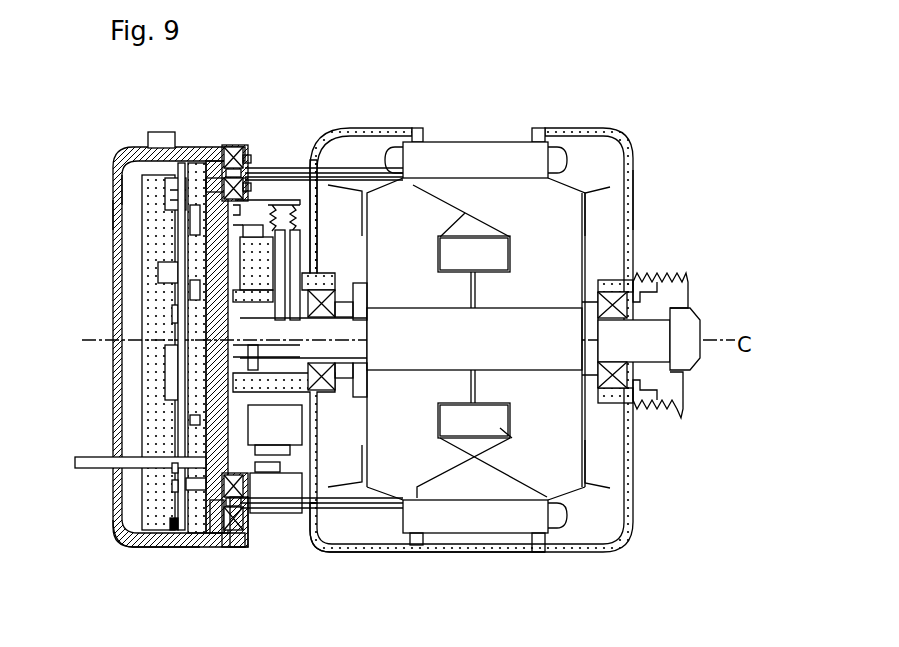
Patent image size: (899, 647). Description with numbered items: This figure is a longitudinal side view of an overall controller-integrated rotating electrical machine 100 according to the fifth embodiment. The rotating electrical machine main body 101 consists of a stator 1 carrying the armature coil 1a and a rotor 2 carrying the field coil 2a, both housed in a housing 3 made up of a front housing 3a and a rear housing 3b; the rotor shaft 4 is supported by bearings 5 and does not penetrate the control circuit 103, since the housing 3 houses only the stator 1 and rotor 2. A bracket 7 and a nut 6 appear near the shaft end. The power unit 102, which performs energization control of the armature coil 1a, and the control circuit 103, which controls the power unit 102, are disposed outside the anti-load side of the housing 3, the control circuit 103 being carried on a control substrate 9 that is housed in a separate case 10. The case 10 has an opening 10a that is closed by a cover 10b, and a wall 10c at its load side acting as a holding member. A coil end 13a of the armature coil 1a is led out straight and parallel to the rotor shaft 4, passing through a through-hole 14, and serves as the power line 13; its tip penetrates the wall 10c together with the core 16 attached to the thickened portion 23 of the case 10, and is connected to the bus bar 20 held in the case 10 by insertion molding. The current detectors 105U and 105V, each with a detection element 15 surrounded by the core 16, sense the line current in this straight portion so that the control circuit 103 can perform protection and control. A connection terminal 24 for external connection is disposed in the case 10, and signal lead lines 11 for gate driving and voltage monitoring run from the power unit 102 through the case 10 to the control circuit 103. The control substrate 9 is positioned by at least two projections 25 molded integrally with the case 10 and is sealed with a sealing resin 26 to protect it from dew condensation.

The case 10 is at (132, 153).
The opening of the case 10a is at (122, 186).
The cover 10b is at (120, 210).
The wall (holding member) 10c is at (212, 302).
The current detector 105V is at (218, 150).
The current detector 105U is at (243, 518).
The controller-integrated rotating electrical machine 100 is at (322, 137).
The rotating electrical machine main body 101 is at (483, 137).
The power unit 102 is at (270, 441).
The control circuit 103 is at (172, 332).
The housing 3 is at (322, 138).
The front housing 3a is at (636, 185).
The rear housing 3b is at (420, 130).
The coil end 13a is at (350, 172).
The power line 13 is at (362, 545).
The through-hole 14 is at (323, 548).
The stator 1 is at (488, 155).
The armature coil 1a is at (564, 135).
The rotor 2 is at (560, 515).
The field coil 2a is at (500, 428).
The rotor shaft 4 is at (330, 345).
The bearing 5 is at (648, 278).
The nut 6 is at (700, 275).
The bracket 7 is at (340, 197).
The control substrate 9 is at (178, 388).
The signal lead line 11 is at (168, 455).
The detection element 15 is at (192, 548).
The core 16 is at (230, 548).
The bus bar 20 is at (172, 527).
The thickened portion 23 is at (222, 548).
The connection terminal 24 is at (102, 468).
The positioning projection 25 is at (147, 548).
The sealing resin 26 is at (152, 273).